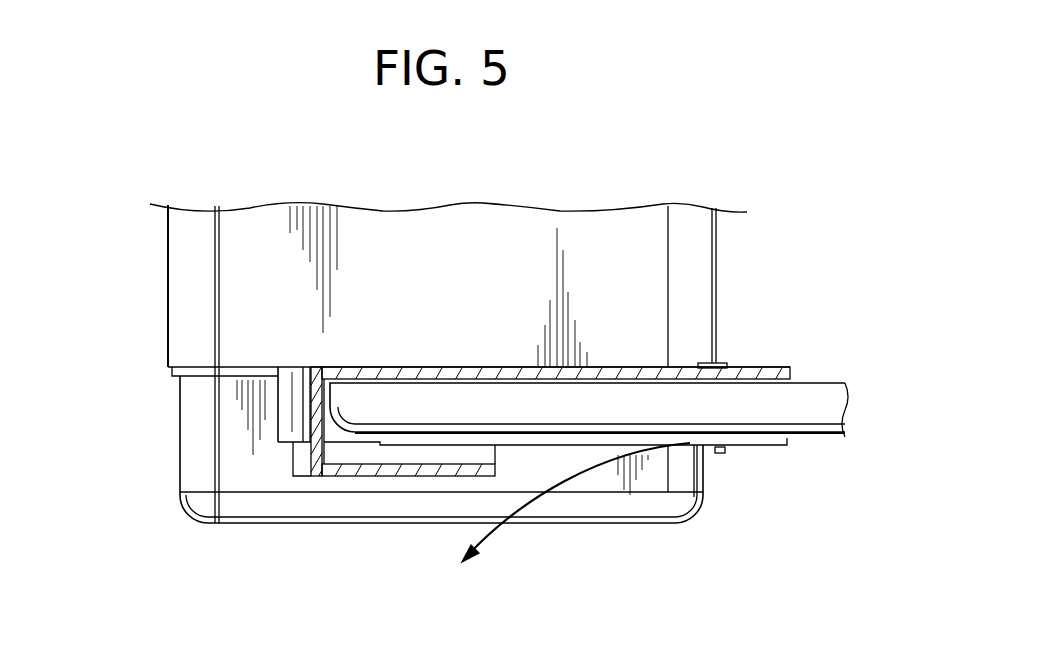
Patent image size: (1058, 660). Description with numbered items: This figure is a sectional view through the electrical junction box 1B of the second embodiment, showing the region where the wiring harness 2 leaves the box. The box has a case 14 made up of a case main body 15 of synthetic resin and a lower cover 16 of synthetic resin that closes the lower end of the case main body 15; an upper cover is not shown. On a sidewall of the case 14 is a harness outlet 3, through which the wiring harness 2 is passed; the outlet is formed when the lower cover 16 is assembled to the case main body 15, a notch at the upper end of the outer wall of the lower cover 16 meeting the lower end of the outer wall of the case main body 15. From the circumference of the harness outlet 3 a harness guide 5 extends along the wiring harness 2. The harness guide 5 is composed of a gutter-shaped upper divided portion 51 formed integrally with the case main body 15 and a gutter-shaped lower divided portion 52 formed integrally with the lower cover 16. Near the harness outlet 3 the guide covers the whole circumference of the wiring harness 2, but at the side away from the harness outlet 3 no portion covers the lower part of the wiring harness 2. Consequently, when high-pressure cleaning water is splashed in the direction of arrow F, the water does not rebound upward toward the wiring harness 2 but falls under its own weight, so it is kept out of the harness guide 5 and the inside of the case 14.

The case 14 is at (166, 248).
The case main body 15 is at (168, 310).
The lower cover 16 is at (180, 453).
The electrical junction box 1B is at (808, 167).
The upper divided portion 51 is at (461, 366).
The lower divided portion 52 is at (410, 477).
The harness outlet 3 is at (334, 437).
The harness guide 5 is at (624, 369).
The wiring harness 2 is at (818, 398).
The arrow F is at (600, 463).